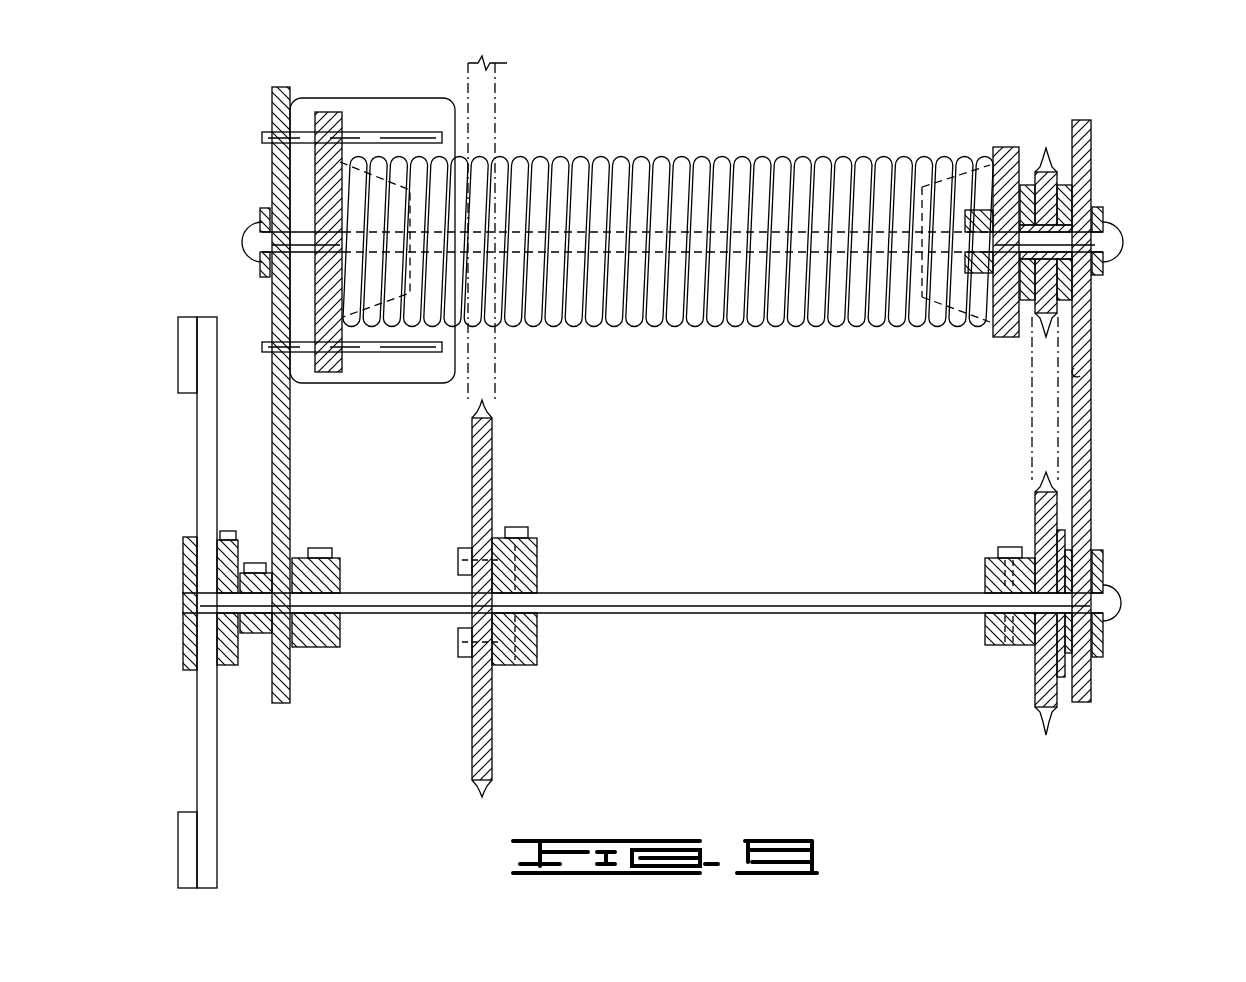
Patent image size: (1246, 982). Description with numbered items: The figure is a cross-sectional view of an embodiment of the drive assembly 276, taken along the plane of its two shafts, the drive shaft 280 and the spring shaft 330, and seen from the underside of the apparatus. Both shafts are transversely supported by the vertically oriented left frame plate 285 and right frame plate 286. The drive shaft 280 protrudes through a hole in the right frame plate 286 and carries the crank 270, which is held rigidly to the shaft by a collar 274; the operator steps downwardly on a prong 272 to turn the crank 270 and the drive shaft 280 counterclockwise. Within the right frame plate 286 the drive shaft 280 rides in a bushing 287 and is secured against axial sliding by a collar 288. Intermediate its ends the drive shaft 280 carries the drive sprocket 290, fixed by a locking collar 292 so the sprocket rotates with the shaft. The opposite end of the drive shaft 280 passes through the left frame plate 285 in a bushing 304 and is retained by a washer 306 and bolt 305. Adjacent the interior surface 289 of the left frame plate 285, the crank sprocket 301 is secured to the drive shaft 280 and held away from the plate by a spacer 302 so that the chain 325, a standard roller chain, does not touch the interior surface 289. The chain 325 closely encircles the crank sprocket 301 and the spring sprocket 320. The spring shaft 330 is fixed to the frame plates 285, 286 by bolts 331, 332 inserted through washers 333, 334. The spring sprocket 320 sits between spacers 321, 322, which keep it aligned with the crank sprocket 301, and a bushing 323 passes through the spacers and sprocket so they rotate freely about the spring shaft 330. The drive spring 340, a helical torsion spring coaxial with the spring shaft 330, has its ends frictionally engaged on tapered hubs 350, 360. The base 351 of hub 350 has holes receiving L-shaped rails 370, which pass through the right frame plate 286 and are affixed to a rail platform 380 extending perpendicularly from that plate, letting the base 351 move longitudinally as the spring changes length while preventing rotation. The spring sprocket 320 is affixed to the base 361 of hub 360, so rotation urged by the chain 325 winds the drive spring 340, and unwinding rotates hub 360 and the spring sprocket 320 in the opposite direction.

The crank 270 is at (136, 602).
The prong 272 is at (177, 829).
The collar 274 is at (183, 637).
The drive assembly 276 is at (682, 211).
The drive shaft 280 is at (752, 592).
The left frame plate 285 is at (1090, 463).
The right frame plate 286 is at (271, 451).
The bushing 287 is at (295, 557).
The collar 288 is at (328, 647).
The interior surface 289 is at (1080, 376).
The drive sprocket 290 is at (493, 487).
The locking collar 292 is at (538, 562).
The crank sprocket 301 is at (1037, 705).
The spacer 302 is at (1068, 537).
The bushing 304 is at (1100, 575).
The bolt 305 is at (1122, 603).
The washer 306 is at (1100, 651).
The spring sprocket 320 is at (1058, 167).
The spacer 321 is at (1028, 300).
The spacer 322 is at (1065, 285).
The bushing 323 is at (1067, 212).
The chain 325 is at (1030, 453).
The spring shaft 330 is at (695, 256).
The bolt 331 is at (258, 230).
The bolt 332 is at (1122, 242).
The washer 333 is at (258, 268).
The washer 334 is at (1103, 217).
The drive spring 340 is at (680, 158).
The tapered hub 350 is at (369, 125).
The base 351 is at (316, 187).
The tapered hub 360 is at (958, 180).
The base 361 is at (1005, 147).
The L-shaped rail 370 is at (387, 131).
The rail platform 380 is at (292, 97).